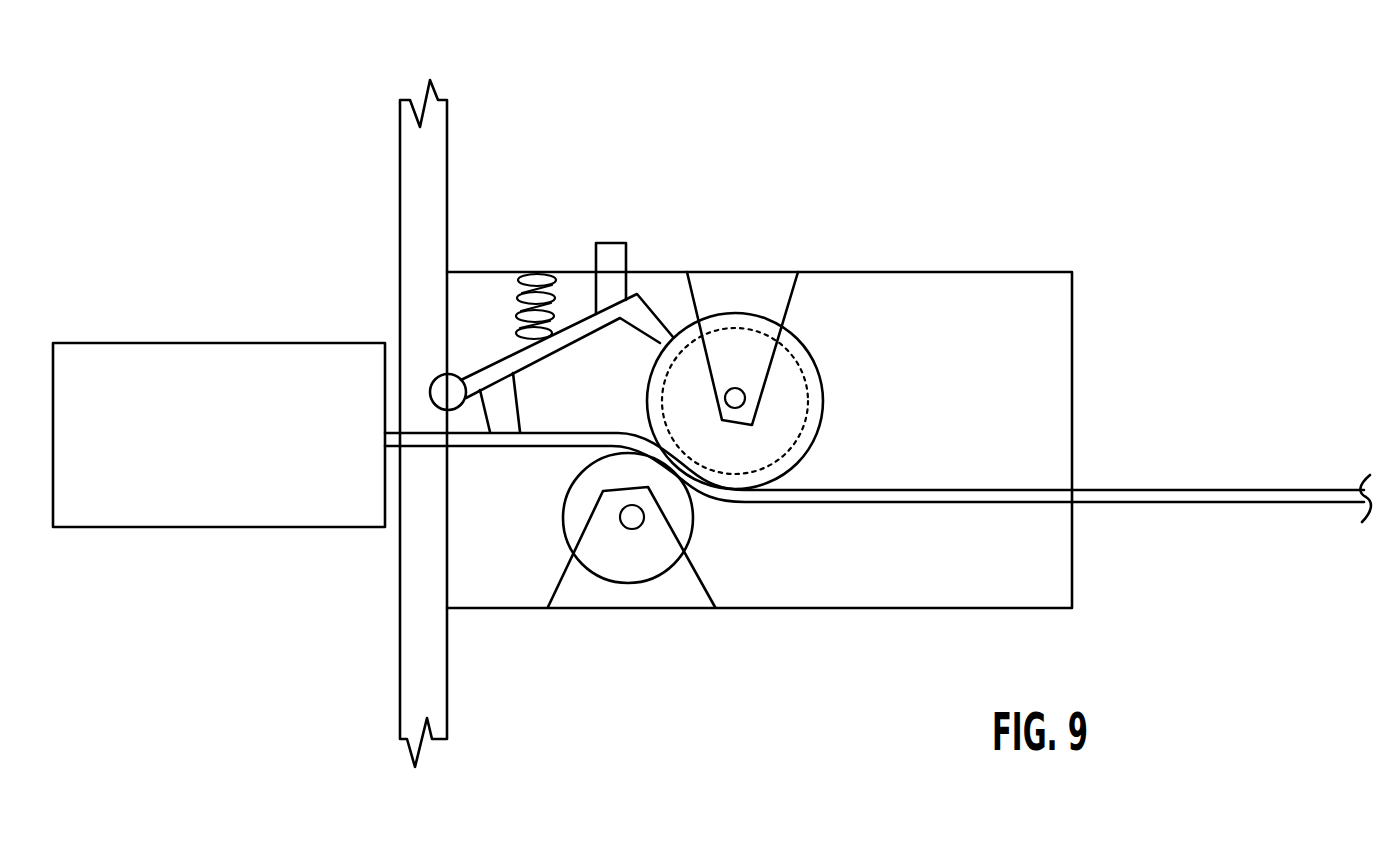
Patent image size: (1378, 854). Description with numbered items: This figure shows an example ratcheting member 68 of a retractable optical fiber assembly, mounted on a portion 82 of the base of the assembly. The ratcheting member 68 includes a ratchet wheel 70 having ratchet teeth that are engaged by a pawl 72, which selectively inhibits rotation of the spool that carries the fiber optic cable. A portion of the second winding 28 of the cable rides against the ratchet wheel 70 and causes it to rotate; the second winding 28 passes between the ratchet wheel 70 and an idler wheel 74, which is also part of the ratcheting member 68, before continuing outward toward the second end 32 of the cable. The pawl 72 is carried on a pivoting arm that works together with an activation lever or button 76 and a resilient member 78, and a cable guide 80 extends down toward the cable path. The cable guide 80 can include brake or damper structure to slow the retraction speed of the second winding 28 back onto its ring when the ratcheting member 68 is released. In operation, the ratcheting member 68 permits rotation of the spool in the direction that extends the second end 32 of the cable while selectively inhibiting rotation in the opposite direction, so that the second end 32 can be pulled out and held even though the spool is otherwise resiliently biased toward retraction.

The second winding 28 is at (1133, 497).
The second end 32 is at (180, 377).
The ratcheting member 68 is at (633, 115).
The ratchet wheel 70 is at (775, 397).
The pawl 72 is at (633, 342).
The idler wheel 74 is at (682, 525).
The activation lever or button 76 is at (618, 262).
The resilient member 78 is at (533, 278).
The cable guide 80 is at (502, 407).
The portion of the base 82 is at (418, 197).